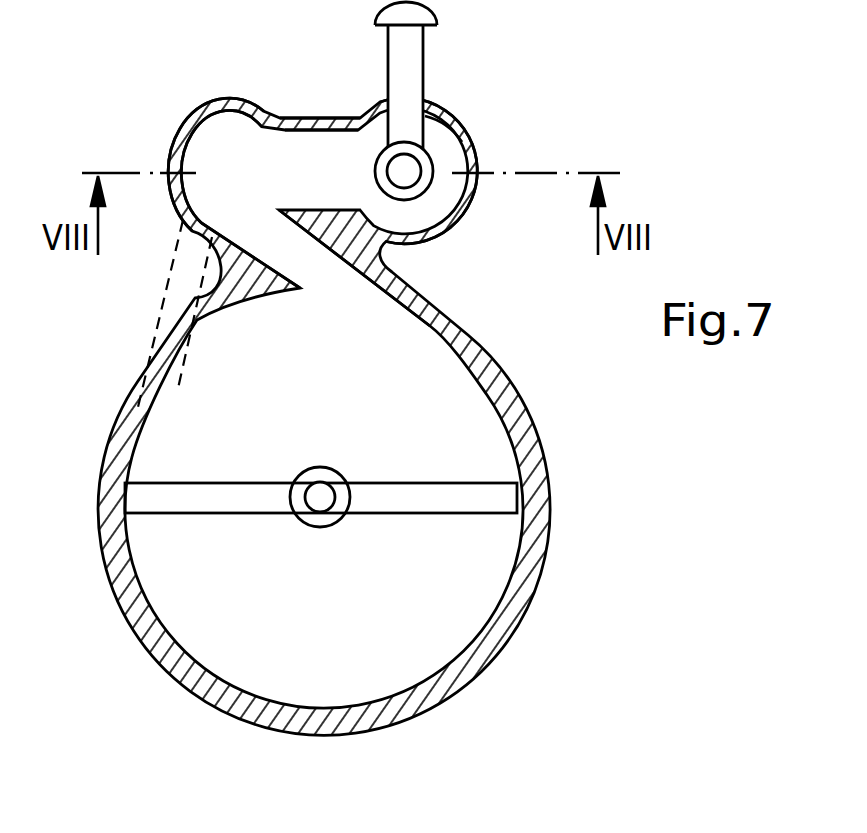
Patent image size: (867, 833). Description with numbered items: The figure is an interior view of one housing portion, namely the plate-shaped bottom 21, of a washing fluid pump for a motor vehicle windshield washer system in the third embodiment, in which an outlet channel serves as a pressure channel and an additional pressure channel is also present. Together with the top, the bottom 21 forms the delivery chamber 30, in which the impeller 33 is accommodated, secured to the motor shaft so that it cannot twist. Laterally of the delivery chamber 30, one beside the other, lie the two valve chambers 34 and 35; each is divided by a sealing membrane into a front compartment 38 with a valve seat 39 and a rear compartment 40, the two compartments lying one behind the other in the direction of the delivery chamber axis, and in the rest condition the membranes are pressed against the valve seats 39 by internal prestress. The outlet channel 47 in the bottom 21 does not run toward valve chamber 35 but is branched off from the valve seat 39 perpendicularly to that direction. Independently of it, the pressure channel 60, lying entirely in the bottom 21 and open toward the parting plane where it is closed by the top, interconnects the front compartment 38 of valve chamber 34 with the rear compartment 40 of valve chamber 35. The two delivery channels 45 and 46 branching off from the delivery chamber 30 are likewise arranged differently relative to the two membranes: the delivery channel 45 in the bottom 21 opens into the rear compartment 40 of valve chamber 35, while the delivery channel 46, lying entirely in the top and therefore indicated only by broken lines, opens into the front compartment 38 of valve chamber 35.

The bottom 21 is at (530, 440).
The delivery chamber 30 is at (470, 413).
The impeller 33 is at (497, 502).
The valve chamber 34 is at (455, 151).
The valve chamber 35 is at (246, 132).
The front compartment 38 is at (442, 127).
The valve seat 39 is at (424, 188).
The rear compartment 40 is at (212, 153).
The delivery channel 45 is at (303, 259).
The delivery channel 46 is at (185, 281).
The outlet channel 47 is at (415, 52).
The pressure channel 60 is at (316, 147).